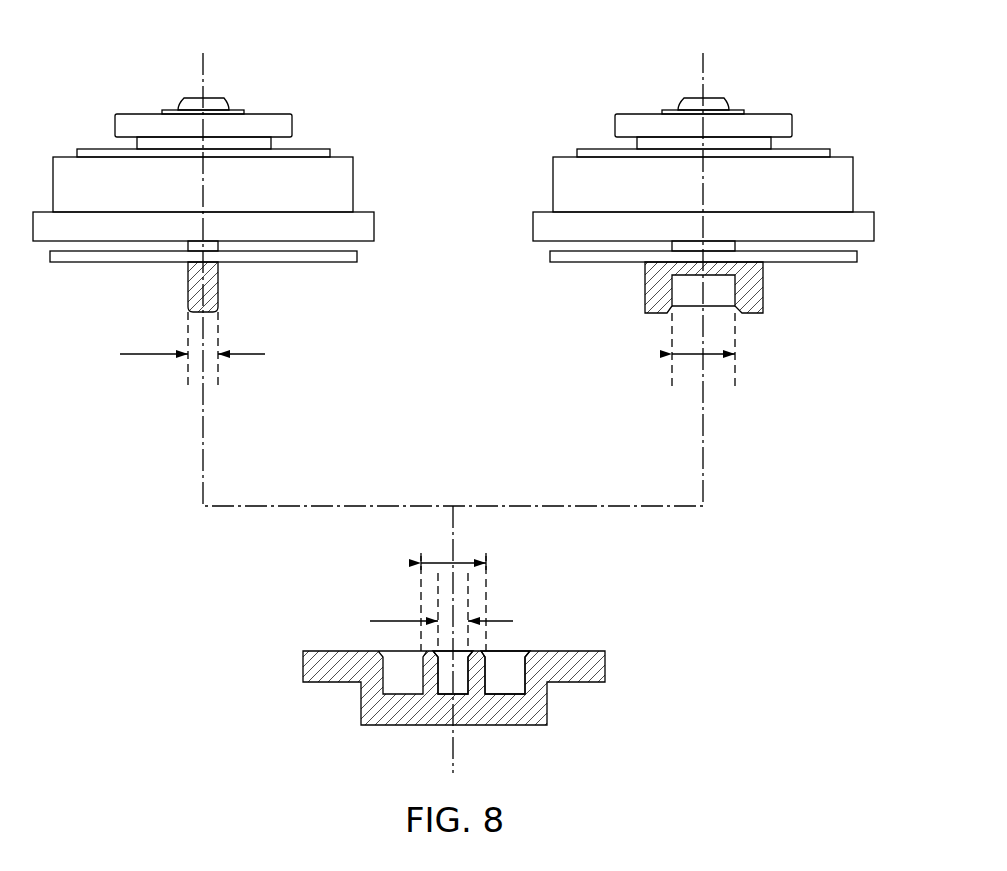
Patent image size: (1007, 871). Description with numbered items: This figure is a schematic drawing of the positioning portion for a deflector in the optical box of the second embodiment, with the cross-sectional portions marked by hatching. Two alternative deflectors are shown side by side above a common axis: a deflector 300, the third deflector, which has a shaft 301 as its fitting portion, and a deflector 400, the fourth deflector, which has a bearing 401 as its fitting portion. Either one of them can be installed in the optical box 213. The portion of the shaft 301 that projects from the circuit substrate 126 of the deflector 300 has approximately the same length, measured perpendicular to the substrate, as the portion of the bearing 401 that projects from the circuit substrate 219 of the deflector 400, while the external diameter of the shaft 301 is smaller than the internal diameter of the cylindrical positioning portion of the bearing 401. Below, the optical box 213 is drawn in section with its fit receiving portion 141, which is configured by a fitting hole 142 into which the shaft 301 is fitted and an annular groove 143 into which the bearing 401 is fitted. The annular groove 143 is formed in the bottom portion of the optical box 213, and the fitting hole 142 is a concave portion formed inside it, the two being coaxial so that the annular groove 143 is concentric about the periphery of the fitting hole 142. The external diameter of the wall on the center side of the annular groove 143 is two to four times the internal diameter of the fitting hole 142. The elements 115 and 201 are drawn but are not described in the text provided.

The deflector 300 is at (286, 74).
The disk member 115 is at (280, 127).
The circuit substrate 126 is at (297, 257).
The shaft 301 is at (197, 297).
The deflector 400 is at (791, 74).
The disk member 201 is at (775, 127).
The circuit substrate 219 is at (783, 257).
The bearing 401 is at (662, 287).
The fit receiving portion 141 is at (540, 632).
The optical box 213 is at (325, 664).
The fitting hole 142 is at (442, 682).
The annular groove 143 is at (487, 675).